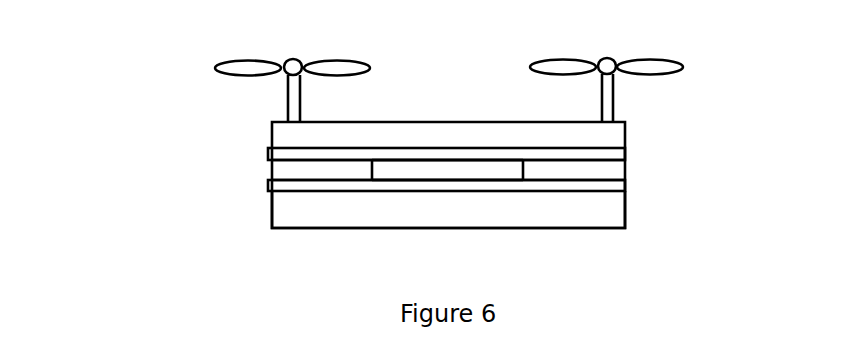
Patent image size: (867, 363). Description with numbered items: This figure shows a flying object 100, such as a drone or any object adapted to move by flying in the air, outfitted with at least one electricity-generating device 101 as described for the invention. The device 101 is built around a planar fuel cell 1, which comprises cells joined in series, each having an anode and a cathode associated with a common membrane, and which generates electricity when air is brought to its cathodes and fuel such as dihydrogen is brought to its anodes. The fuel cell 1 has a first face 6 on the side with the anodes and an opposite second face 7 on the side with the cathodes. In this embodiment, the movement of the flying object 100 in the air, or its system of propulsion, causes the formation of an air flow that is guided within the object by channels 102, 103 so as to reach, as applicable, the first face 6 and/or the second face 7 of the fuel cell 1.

The flying object 100 is at (230, 145).
The device 101 is at (376, 202).
The channel 102 is at (615, 156).
The channel 103 is at (615, 186).
The planar fuel cell 1 is at (474, 173).
The first face 6 is at (412, 162).
The second face 7 is at (455, 180).